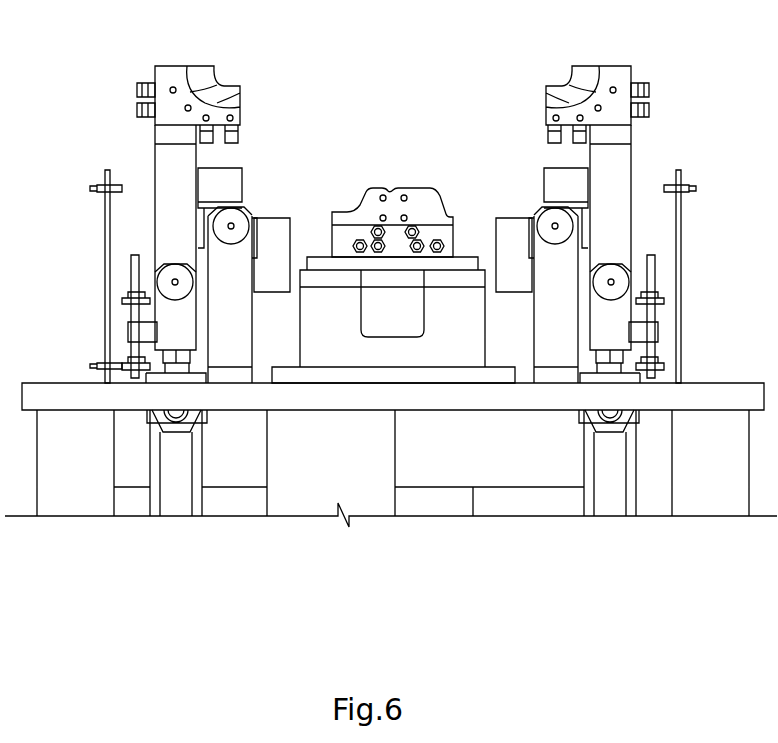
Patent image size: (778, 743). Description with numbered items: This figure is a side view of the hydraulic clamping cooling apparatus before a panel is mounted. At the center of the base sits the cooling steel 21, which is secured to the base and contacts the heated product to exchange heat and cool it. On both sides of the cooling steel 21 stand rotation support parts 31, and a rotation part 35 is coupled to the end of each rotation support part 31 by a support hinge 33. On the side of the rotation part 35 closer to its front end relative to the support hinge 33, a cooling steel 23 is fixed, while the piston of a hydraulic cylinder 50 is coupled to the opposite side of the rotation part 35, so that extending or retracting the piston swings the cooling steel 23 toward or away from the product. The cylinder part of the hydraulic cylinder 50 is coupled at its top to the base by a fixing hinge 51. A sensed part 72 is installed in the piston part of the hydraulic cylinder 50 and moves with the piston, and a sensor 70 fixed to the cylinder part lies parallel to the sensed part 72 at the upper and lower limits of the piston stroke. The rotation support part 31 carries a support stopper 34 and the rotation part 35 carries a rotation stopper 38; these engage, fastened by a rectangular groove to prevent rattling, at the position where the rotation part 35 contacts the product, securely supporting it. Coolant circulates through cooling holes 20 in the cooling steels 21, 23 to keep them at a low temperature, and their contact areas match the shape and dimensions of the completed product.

The cooling hole 20 is at (241, 137).
The cooling steel 21 is at (413, 198).
The cooling steel 23 is at (615, 74).
The rotation support part 31 is at (543, 338).
The support hinge 33 is at (547, 218).
The support stopper 34 is at (510, 225).
The rotation part 35 is at (628, 157).
The rotation stopper 38 is at (555, 175).
The hydraulic cylinder 50 is at (613, 505).
The fixing hinge 51 is at (610, 413).
The sensor 70 is at (90, 188).
The sensed part 72 is at (125, 358).